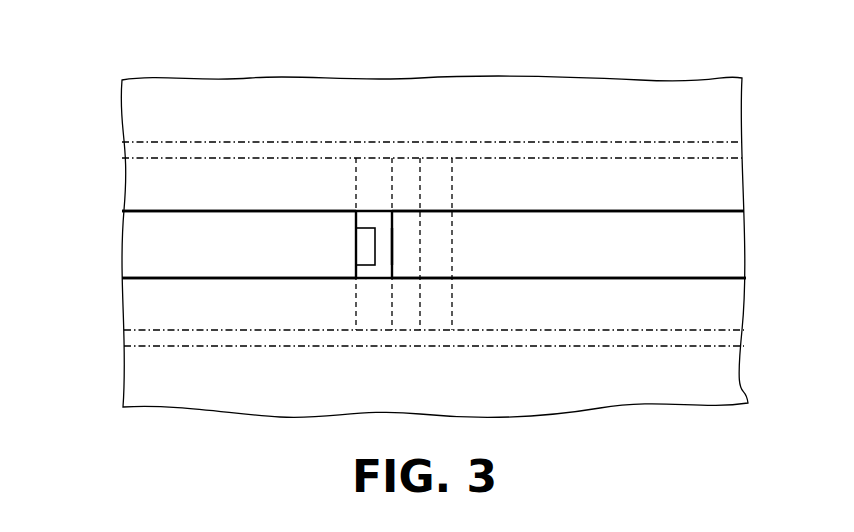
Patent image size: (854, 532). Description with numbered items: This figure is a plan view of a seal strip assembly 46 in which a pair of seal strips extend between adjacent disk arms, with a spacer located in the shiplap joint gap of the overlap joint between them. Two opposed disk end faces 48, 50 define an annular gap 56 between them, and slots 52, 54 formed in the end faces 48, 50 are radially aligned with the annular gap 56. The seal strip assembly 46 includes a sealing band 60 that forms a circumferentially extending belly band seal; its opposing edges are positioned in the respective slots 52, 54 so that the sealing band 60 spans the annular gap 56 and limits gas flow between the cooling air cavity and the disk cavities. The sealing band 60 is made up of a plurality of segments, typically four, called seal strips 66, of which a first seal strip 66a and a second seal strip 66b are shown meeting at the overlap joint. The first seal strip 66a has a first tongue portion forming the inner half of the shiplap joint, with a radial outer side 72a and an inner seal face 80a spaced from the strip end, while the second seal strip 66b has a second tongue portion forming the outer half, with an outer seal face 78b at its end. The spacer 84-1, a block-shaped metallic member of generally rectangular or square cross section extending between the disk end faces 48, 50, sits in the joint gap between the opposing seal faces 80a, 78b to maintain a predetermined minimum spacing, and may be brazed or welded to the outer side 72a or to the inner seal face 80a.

The seal strip assembly 46 is at (292, 112).
The disk end face 48 is at (690, 213).
The disk end face 50 is at (686, 278).
The slot 52 is at (623, 140).
The slot 54 is at (558, 348).
The annular gap 56 is at (626, 259).
The sealing band 60 is at (588, 253).
The seal strips 66 is at (400, 224).
The first seal strip 66a is at (223, 238).
The second seal strip 66b is at (500, 243).
The radial outer side of first tongue portion 72a is at (384, 228).
The outer seal face of second tongue portion 78b is at (390, 265).
The inner seal face of first tongue portion 80a is at (362, 280).
The spacer 84-1 is at (365, 220).